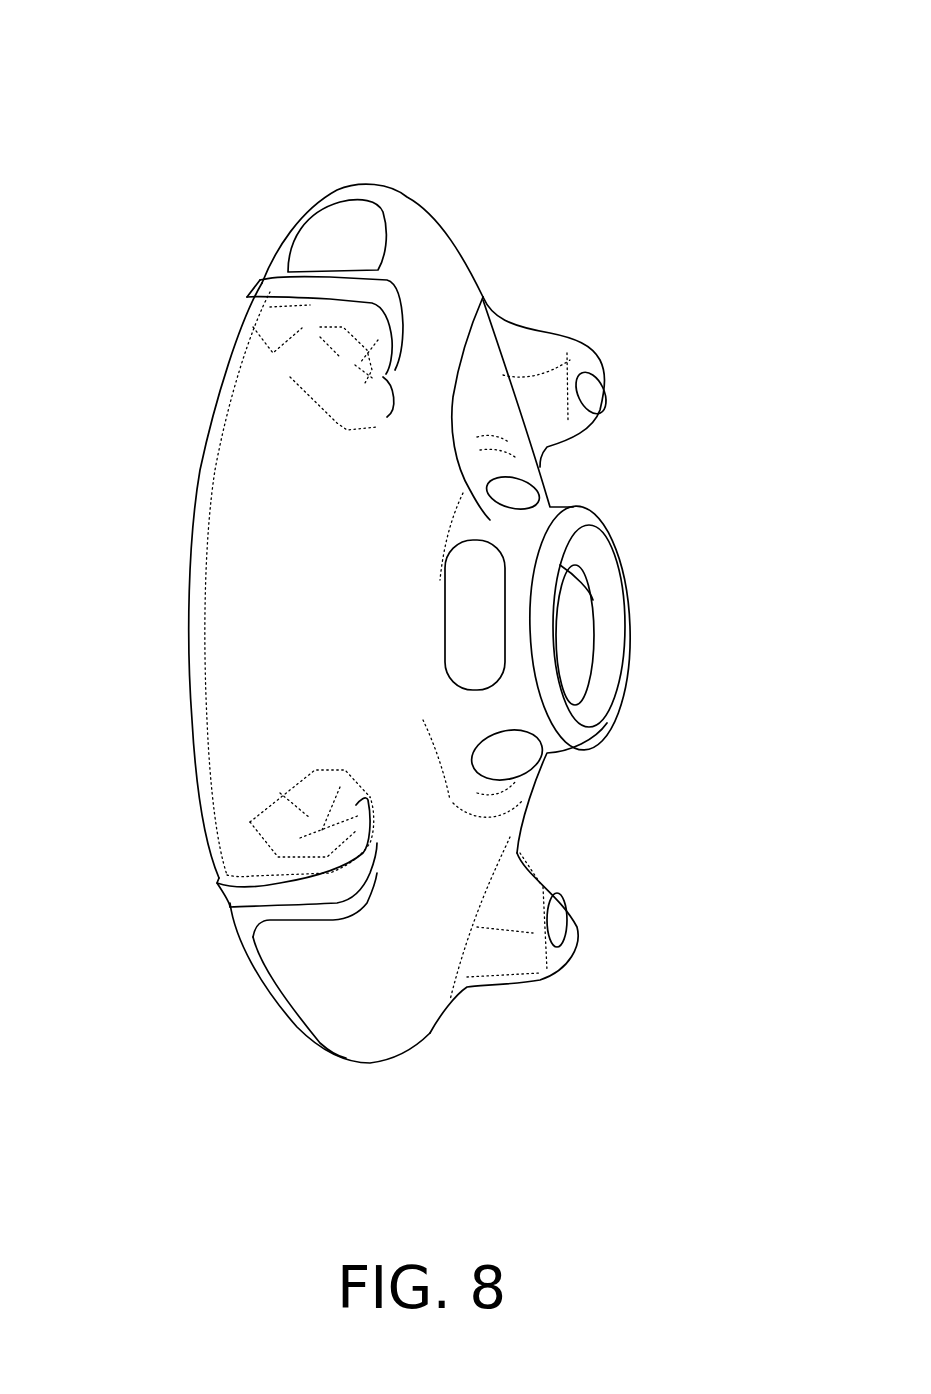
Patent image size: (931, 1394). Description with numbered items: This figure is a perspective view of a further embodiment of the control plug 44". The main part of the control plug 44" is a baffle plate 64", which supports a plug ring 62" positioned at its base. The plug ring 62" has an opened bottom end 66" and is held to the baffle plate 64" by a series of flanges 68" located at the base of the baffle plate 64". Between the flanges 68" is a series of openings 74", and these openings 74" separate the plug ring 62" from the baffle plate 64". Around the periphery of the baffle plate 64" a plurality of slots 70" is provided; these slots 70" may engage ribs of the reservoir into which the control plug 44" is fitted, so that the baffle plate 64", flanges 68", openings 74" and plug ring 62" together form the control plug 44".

The control plug 44 is at (200, 163).
The plug ring 62 is at (603, 563).
The baffle plate 64 is at (363, 1022).
The opened bottom end 66 is at (590, 673).
The flanges 68 is at (483, 297).
The slots 70 is at (365, 295).
The openings 74 is at (478, 602).